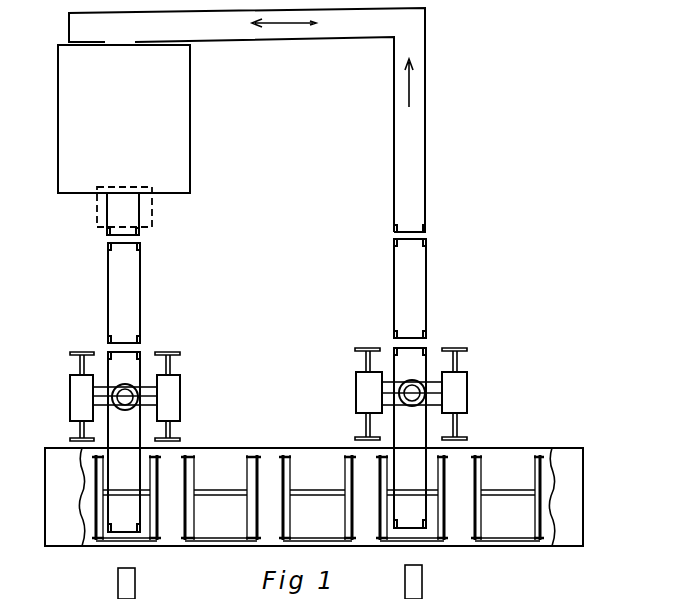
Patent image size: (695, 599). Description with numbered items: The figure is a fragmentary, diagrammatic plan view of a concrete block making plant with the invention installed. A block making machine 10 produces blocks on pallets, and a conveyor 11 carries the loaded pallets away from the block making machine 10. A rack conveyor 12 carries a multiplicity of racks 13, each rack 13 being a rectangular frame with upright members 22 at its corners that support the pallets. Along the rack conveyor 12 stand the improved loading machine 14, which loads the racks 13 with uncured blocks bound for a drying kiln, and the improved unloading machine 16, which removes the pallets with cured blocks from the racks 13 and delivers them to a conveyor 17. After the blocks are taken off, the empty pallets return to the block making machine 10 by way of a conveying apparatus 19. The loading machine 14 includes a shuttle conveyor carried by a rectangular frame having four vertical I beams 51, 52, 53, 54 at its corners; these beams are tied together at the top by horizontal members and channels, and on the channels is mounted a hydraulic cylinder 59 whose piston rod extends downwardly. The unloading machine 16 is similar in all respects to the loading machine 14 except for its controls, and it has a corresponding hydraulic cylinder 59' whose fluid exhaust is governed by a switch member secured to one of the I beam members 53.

The block making machine 10 is at (191, 136).
The conveyor 11 is at (135, 281).
The rack conveyor 12 is at (242, 444).
The rack 13 is at (307, 521).
The loading machine 14 is at (132, 381).
The unloading machine 16 is at (480, 333).
The conveyor 17 is at (430, 273).
The conveying apparatus 19 is at (436, 145).
The upright member 22 is at (187, 543).
The I beam 51 is at (83, 352).
The I beam 52 is at (168, 352).
The I beam 53 is at (82, 425).
The I beam 54 is at (168, 431).
The hydraulic cylinder 59 is at (160, 396).
The hydraulic cylinder 59' is at (453, 391).